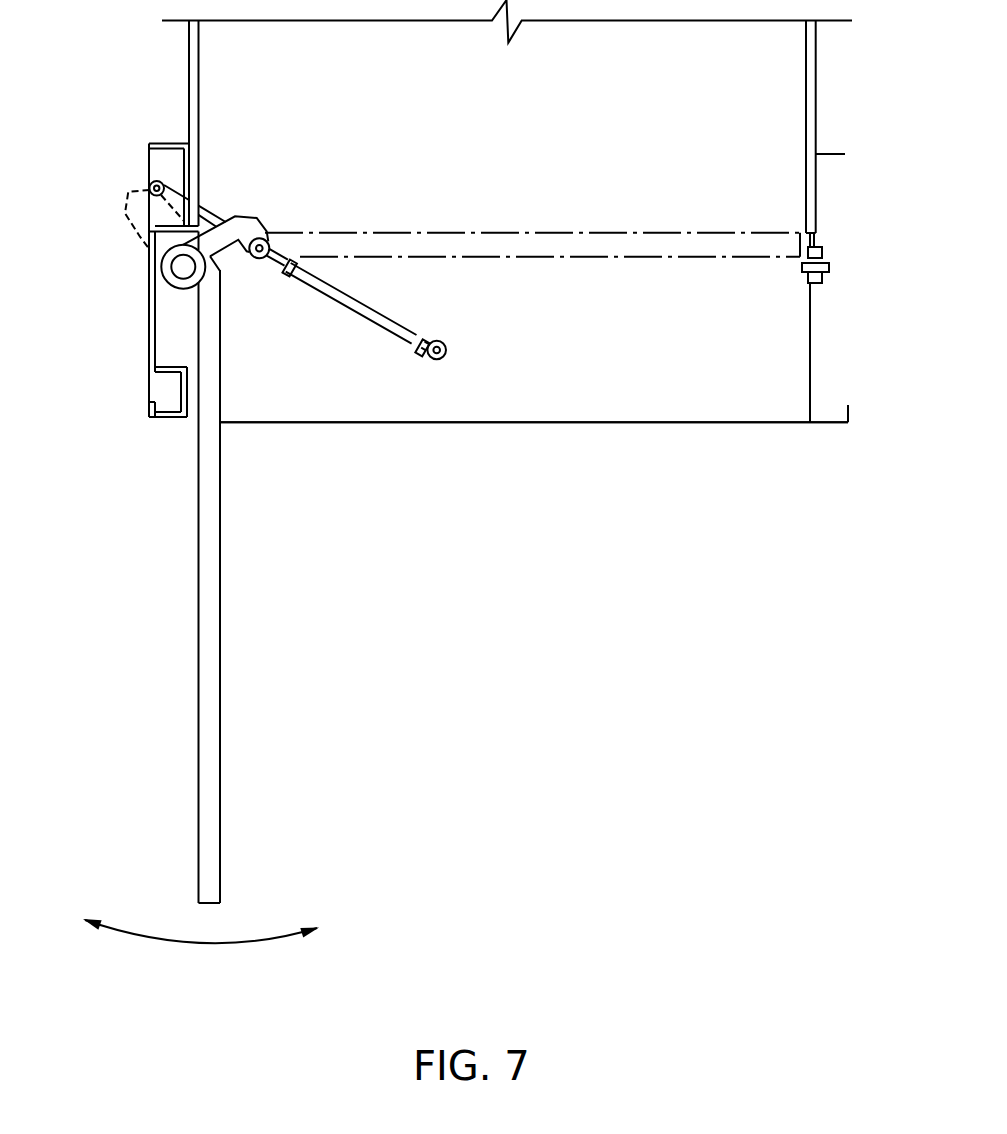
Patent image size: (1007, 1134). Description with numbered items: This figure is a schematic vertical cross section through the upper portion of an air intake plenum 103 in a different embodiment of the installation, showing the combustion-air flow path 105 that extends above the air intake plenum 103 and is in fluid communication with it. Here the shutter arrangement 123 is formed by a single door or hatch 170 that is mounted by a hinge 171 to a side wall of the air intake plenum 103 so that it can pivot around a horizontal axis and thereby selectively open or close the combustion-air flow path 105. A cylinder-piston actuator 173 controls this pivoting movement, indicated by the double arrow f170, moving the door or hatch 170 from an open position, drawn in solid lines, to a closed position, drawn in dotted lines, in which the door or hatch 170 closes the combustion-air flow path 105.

The air intake plenum 103 is at (457, 423).
The combustion-air flow path 105 is at (806, 96).
The shutter arrangement 123 is at (100, 225).
The door or hatch 170 is at (640, 245).
The hinge 171 is at (177, 268).
The cylinder-piston actuator 173 is at (367, 308).
The double arrow f170 is at (212, 945).